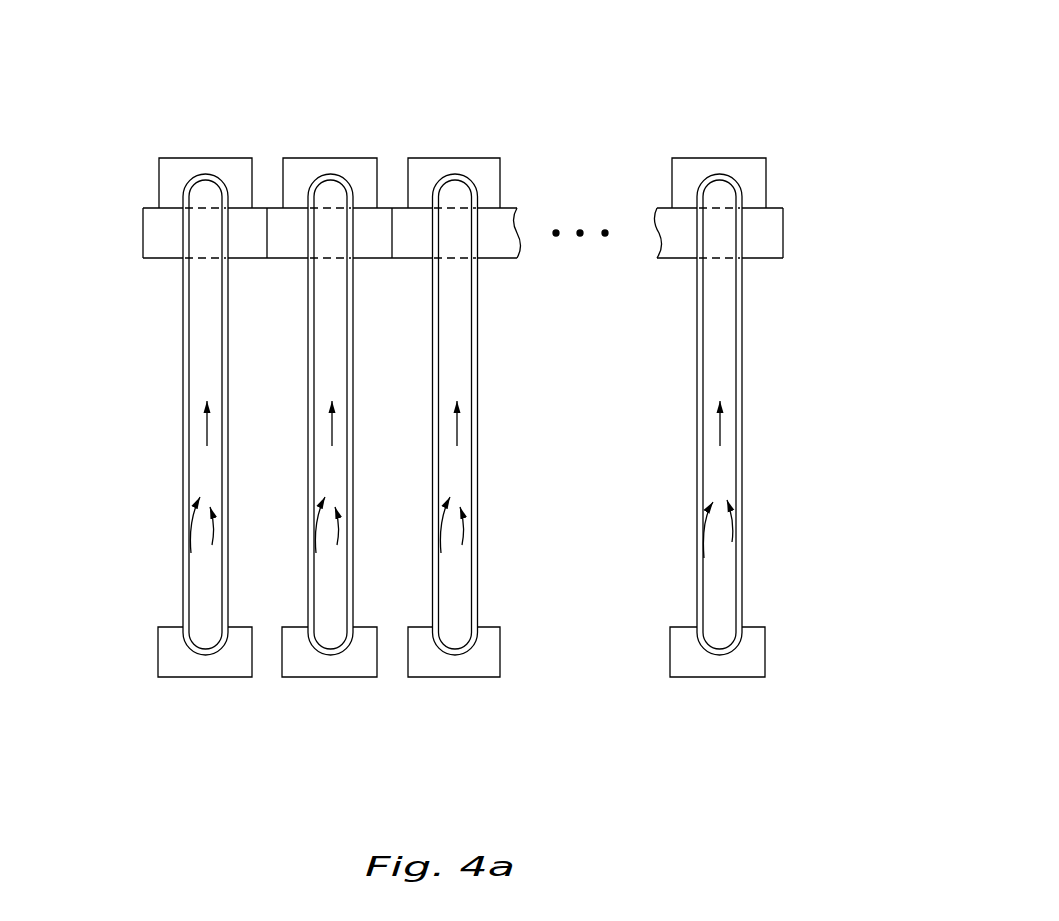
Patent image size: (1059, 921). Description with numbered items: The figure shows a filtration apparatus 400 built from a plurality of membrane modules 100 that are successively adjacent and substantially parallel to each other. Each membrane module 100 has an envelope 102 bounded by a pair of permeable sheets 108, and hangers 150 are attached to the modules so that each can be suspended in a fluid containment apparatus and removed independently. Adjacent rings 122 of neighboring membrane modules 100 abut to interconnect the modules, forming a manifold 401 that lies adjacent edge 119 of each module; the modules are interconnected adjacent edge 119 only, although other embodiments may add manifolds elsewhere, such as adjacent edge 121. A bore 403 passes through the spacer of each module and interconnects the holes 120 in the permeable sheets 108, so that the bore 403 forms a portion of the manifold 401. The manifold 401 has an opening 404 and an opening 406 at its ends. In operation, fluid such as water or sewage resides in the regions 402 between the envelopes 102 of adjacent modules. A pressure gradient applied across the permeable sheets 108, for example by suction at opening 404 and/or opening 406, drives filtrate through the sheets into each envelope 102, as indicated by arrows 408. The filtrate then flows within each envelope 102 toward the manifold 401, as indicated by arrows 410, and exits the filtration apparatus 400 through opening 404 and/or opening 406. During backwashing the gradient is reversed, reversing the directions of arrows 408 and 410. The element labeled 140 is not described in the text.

The filtration apparatus 400 is at (634, 67).
The membrane module 100 is at (219, 137).
The hanger 150 is at (243, 158).
The envelope 102 is at (232, 488).
The permeable sheet 108 is at (184, 373).
The tube outer surface 140 is at (228, 388).
The edge 119 is at (200, 177).
The edge 121 is at (205, 656).
The arrow 410 is at (208, 428).
The arrow 408 is at (215, 541).
The region 402 is at (283, 532).
The manifold 401 is at (531, 201).
The opening 404 is at (143, 222).
The opening 406 is at (783, 222).
The ring 122 is at (767, 273).
The hole 120 is at (440, 206).
The bore 403 is at (454, 238).